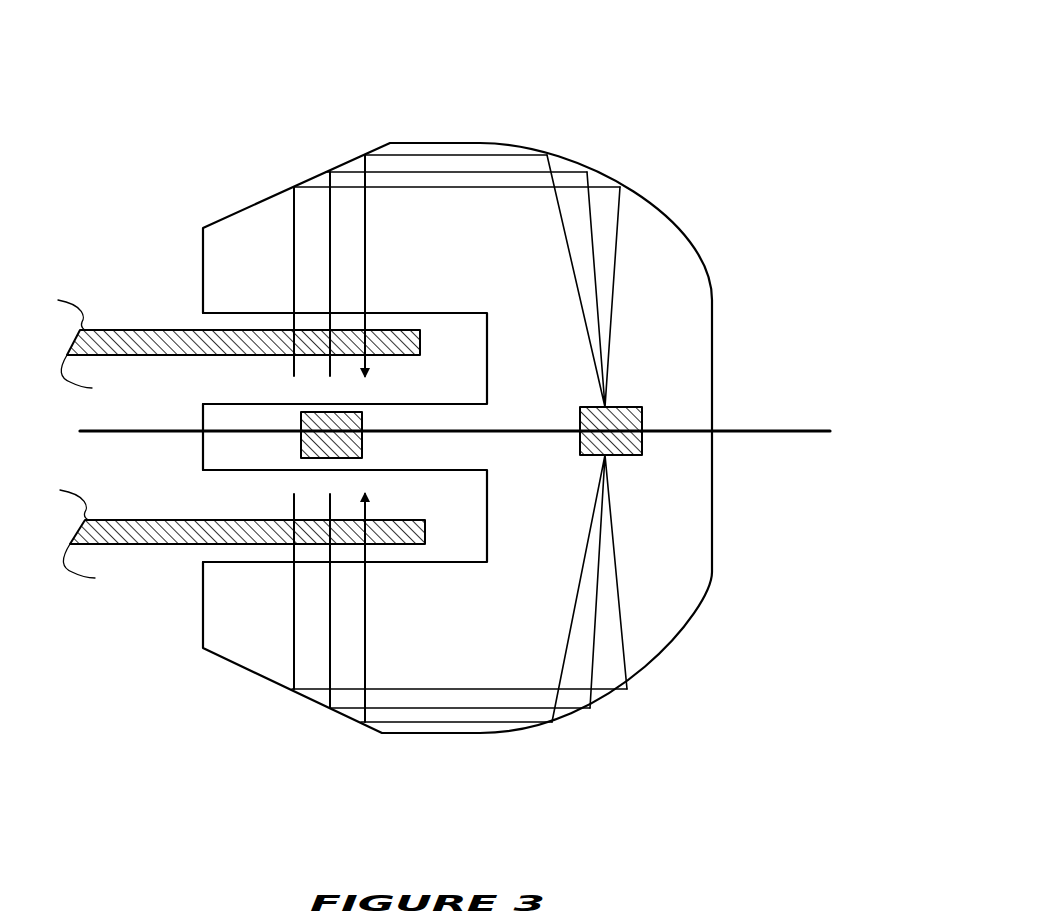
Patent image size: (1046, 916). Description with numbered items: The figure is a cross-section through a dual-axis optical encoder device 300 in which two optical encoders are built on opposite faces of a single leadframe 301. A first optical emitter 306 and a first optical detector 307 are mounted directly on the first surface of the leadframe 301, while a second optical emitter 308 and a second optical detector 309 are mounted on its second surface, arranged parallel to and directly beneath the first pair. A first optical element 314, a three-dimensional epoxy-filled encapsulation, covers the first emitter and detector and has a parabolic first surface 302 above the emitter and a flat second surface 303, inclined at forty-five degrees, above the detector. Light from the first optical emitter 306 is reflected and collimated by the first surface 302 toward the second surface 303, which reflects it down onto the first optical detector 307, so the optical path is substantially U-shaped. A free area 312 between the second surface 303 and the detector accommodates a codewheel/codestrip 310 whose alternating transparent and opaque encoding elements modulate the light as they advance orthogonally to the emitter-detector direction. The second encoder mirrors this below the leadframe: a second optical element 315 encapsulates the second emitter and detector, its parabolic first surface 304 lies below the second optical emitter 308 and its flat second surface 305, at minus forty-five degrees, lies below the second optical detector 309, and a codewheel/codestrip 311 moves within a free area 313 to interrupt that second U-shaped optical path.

The optical encoder device 300 is at (720, 76).
The leadframe 301 is at (780, 428).
The first surface of the first optical element 302 is at (661, 210).
The second surface of the first optical element 303 is at (362, 172).
The first surface of the second optical element 304 is at (665, 652).
The second surface of the second optical element 305 is at (335, 712).
The first optical emitter 306 is at (585, 408).
The first optical detector 307 is at (300, 418).
The second optical emitter 308 is at (630, 452).
The second optical detector 309 is at (300, 455).
The codewheel/codestrip 310 is at (160, 330).
The codewheel/codestrip 311 is at (158, 545).
The free area 312 is at (460, 360).
The free area 313 is at (445, 515).
The first optical element 314 is at (683, 328).
The second optical element 315 is at (255, 633).